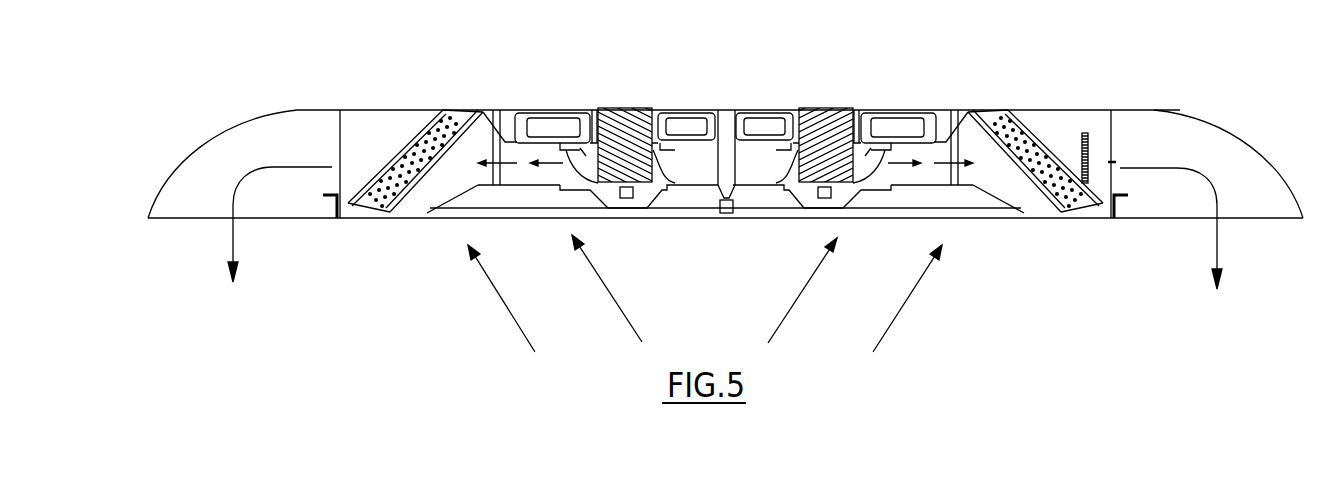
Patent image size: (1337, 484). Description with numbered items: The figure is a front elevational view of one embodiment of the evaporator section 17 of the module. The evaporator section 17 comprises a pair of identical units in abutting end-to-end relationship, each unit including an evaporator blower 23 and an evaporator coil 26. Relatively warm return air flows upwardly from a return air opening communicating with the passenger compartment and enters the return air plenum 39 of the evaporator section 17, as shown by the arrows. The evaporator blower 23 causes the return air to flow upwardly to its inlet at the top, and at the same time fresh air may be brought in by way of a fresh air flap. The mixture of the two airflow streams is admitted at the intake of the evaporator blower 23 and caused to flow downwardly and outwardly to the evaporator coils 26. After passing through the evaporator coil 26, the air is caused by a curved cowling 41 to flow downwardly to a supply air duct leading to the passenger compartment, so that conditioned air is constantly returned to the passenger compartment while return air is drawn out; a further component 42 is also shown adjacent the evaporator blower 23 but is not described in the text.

The evaporator section 17 is at (860, 80).
The evaporator blower 23 is at (815, 150).
The evaporator coil 26 is at (1048, 148).
The return air plenum 39 is at (952, 208).
The curved cowling 41 is at (297, 110).
The fan housing 42 is at (873, 130).